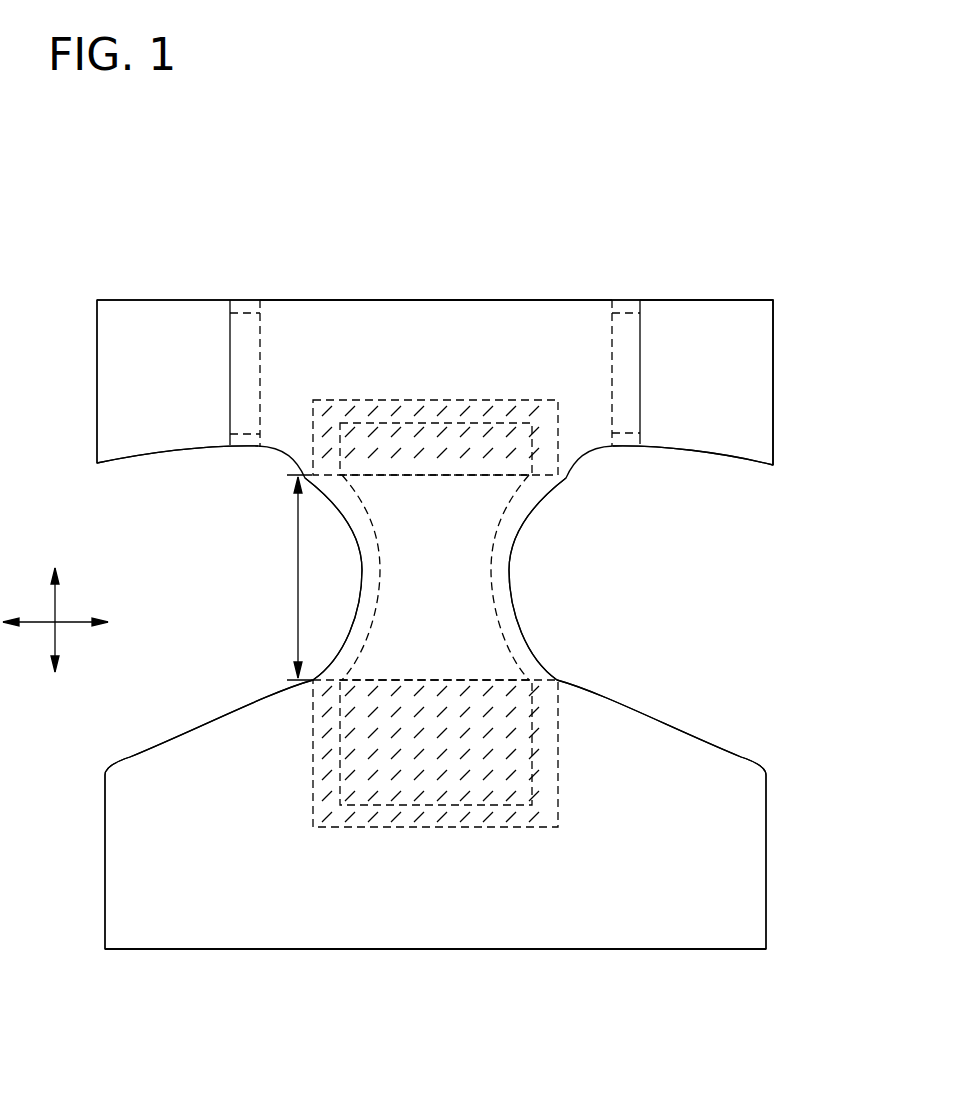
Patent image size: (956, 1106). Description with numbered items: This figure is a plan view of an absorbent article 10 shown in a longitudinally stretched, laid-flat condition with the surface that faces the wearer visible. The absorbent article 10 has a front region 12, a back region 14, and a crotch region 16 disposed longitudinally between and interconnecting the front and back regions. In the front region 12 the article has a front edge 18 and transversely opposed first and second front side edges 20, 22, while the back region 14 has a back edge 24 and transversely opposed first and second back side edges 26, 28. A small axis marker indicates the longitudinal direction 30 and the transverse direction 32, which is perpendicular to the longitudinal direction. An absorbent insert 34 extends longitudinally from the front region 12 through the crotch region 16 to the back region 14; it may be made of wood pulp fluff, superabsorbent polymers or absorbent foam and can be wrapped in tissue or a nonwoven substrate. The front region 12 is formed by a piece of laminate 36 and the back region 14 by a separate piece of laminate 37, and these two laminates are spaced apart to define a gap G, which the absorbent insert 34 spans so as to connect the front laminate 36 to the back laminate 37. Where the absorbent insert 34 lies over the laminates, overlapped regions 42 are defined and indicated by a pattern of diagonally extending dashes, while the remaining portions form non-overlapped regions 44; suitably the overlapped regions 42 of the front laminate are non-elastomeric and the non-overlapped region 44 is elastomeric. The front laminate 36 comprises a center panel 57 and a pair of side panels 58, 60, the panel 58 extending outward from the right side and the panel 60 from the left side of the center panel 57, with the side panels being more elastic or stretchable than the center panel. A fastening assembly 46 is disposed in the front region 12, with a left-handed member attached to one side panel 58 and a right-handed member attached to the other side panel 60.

The absorbent article 10 is at (680, 182).
The front region 12 is at (790, 328).
The back region 14 is at (450, 995).
The crotch region 16 is at (566, 608).
The front edge 18 is at (533, 300).
The first front side edge 20 is at (773, 405).
The second front side edge 22 is at (97, 341).
The back edge 24 is at (551, 950).
The first back side edge 26 is at (766, 927).
The second back side edge 28 is at (105, 888).
The longitudinal direction 30 is at (55, 637).
The transverse direction 32 is at (72, 620).
The absorbent insert 34 is at (456, 535).
The laminate 36 is at (322, 314).
The laminate 37 is at (353, 932).
The overlapped regions 42 is at (558, 432).
The non-overlapped regions 44 is at (268, 427).
The fastening assembly 46 is at (240, 344).
The center panel 57 is at (447, 320).
The side panel 58 is at (703, 433).
The side panel 60 is at (163, 430).
The gap G is at (297, 571).